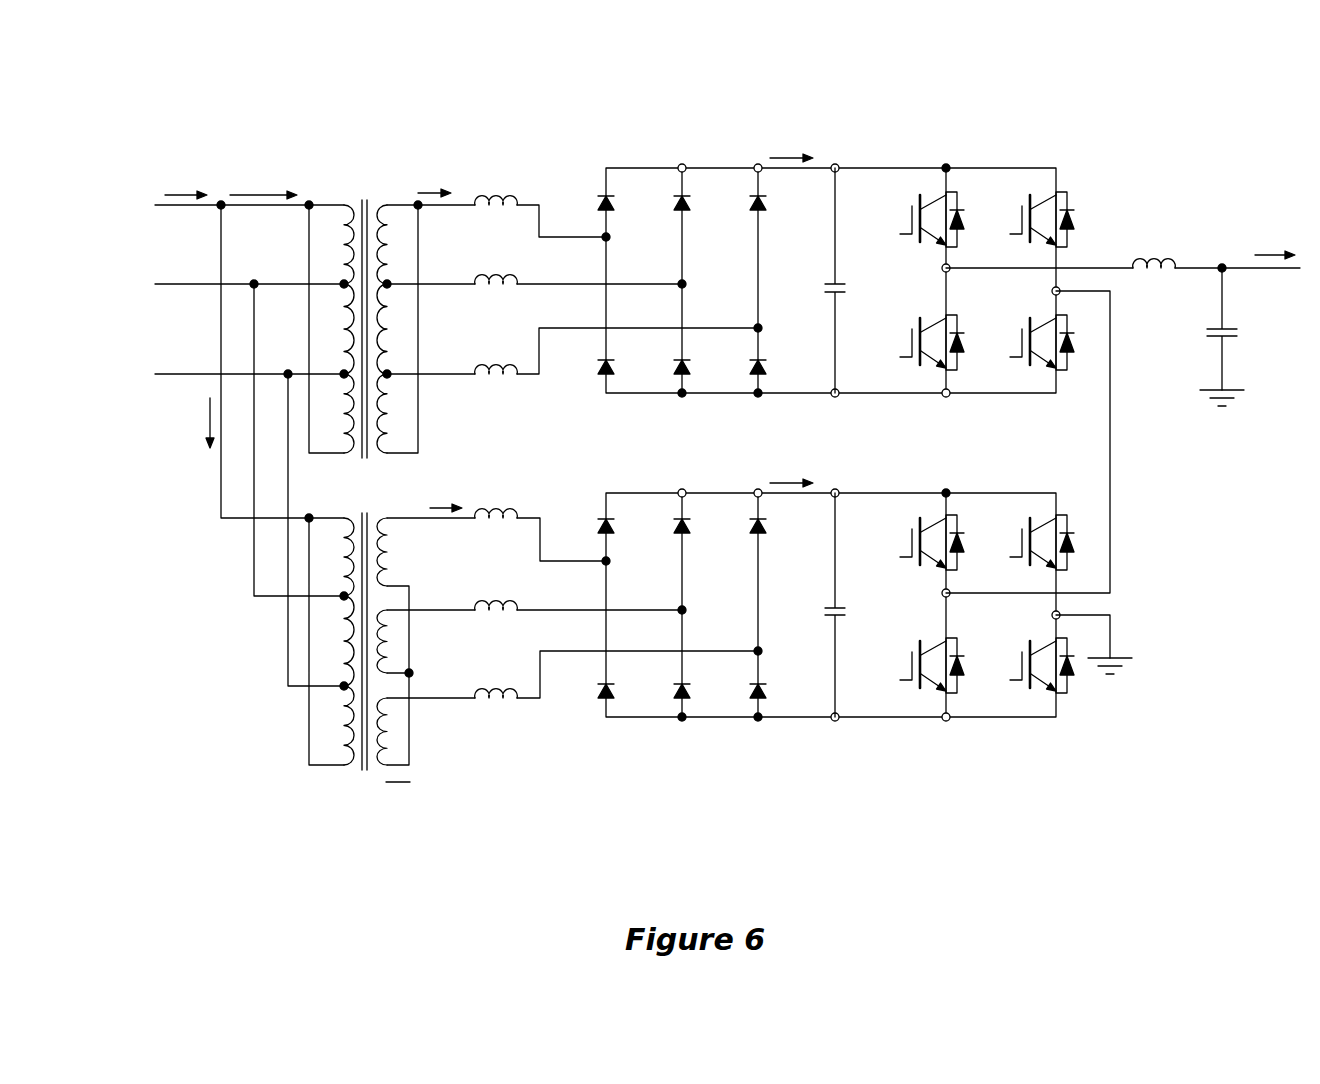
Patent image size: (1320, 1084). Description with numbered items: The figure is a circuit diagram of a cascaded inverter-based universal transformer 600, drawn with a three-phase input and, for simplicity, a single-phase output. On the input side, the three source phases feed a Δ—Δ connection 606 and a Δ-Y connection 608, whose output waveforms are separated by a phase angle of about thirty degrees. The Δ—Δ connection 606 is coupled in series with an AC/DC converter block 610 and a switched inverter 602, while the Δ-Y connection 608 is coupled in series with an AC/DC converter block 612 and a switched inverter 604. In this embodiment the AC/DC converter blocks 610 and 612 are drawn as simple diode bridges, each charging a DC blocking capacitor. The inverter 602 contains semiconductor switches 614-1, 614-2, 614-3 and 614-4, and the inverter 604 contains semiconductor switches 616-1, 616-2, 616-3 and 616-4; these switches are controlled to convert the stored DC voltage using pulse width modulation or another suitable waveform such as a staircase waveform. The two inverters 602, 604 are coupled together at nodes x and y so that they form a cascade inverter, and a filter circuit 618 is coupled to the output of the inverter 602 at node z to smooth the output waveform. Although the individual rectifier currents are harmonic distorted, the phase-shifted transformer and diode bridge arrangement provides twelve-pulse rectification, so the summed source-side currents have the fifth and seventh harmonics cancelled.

The cascaded inverter-based universal transformer 600 is at (615, 82).
The switched inverter 602 is at (918, 144).
The switched inverter 604 is at (987, 476).
The Δ—Δ connection 606 is at (386, 156).
The Δ-Y connection 608 is at (367, 818).
The AC/DC converter block 610 is at (696, 151).
The AC/DC converter block 612 is at (703, 466).
The semiconductor switch 614-1 is at (907, 215).
The semiconductor switch 614-2 is at (907, 328).
The semiconductor switch 614-3 is at (1025, 221).
The semiconductor switch 614-4 is at (1023, 335).
The semiconductor switch 616-1 is at (911, 542).
The semiconductor switch 616-2 is at (908, 665).
The semiconductor switch 616-3 is at (1022, 541).
The semiconductor switch 616-4 is at (1022, 661).
The filter circuit 618 is at (1219, 210).